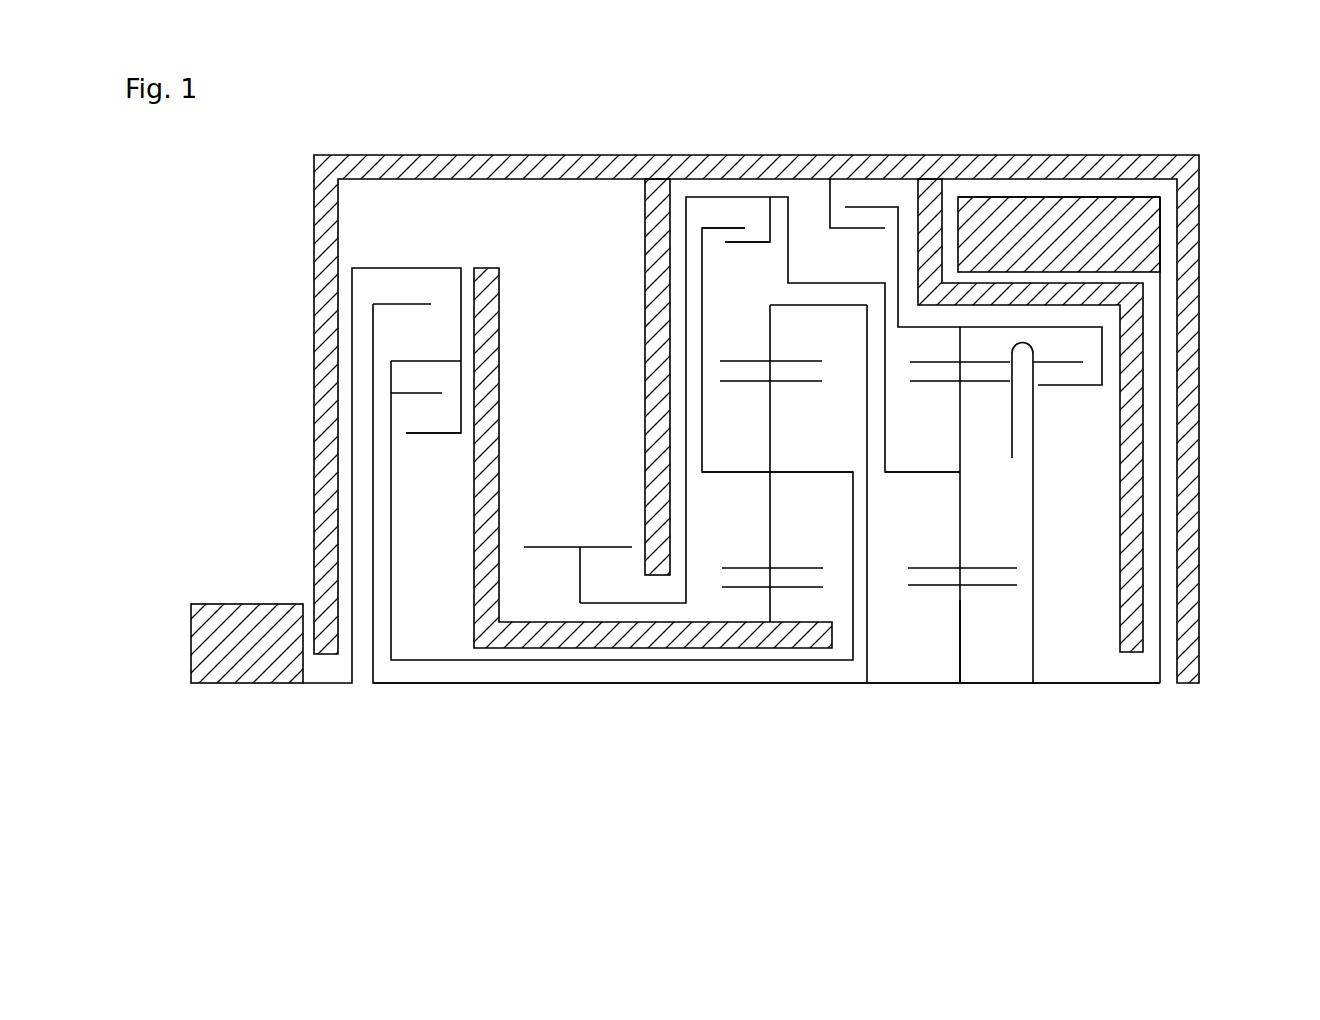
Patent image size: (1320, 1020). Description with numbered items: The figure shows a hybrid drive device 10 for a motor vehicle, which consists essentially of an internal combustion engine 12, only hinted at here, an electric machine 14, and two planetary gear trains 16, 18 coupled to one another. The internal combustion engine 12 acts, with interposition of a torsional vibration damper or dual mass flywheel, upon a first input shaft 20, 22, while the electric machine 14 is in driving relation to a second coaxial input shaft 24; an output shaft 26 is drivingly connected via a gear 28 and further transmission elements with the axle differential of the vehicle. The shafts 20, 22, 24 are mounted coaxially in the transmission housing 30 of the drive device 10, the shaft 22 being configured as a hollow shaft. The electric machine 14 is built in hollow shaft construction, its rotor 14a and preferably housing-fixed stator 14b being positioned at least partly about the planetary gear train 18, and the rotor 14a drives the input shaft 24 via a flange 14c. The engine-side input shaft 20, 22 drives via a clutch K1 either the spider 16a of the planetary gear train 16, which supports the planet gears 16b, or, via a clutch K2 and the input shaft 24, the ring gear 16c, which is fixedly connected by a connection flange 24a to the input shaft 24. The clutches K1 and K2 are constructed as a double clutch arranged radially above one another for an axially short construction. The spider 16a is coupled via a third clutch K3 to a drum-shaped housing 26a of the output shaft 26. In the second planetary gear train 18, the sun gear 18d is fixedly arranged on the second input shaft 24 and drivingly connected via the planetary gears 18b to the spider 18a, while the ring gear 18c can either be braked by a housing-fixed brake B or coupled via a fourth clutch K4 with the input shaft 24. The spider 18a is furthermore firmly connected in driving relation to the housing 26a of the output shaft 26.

The hybrid drive device 10 is at (767, 708).
The internal combustion engine 12 is at (223, 620).
The electric machine 14 is at (1098, 198).
The rotor 14a is at (1140, 272).
The stator 14b is at (1015, 197).
The flange 14c is at (1162, 383).
The planetary gear train 16 is at (573, 265).
The spider 16a is at (712, 480).
The planet gears 16b is at (770, 408).
The ring gear 16c is at (770, 330).
The planetary gear train 18 is at (1090, 632).
The spider 18a is at (930, 474).
The planetary gears 18b is at (963, 543).
The ring gear 18c is at (1012, 458).
The sun gear 18d is at (963, 608).
The first input shaft 20 is at (337, 683).
The first input shaft 22 is at (455, 660).
The second input shaft 24 is at (536, 683).
The connection flange 24a is at (866, 683).
The output shaft 26 is at (647, 603).
The drum-shaped housing 26a is at (682, 198).
The gear 28 is at (552, 547).
The transmission housing 30 is at (323, 257).
The clutch K1 is at (430, 395).
The clutch K2 is at (418, 304).
The third clutch K3 is at (730, 227).
The fourth clutch K4 is at (1092, 385).
The brake B is at (872, 207).